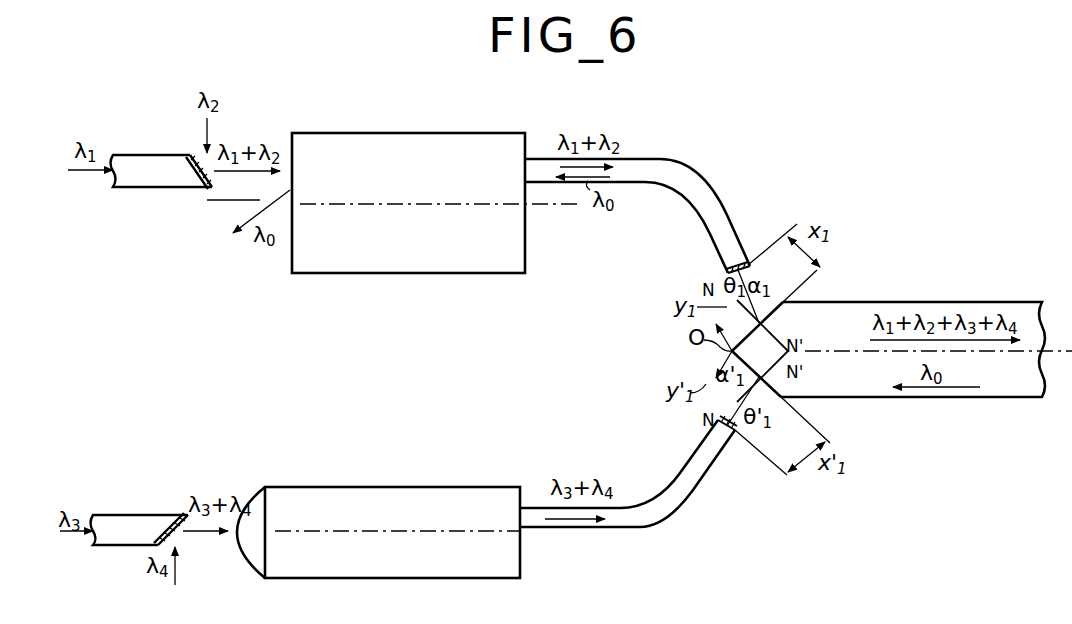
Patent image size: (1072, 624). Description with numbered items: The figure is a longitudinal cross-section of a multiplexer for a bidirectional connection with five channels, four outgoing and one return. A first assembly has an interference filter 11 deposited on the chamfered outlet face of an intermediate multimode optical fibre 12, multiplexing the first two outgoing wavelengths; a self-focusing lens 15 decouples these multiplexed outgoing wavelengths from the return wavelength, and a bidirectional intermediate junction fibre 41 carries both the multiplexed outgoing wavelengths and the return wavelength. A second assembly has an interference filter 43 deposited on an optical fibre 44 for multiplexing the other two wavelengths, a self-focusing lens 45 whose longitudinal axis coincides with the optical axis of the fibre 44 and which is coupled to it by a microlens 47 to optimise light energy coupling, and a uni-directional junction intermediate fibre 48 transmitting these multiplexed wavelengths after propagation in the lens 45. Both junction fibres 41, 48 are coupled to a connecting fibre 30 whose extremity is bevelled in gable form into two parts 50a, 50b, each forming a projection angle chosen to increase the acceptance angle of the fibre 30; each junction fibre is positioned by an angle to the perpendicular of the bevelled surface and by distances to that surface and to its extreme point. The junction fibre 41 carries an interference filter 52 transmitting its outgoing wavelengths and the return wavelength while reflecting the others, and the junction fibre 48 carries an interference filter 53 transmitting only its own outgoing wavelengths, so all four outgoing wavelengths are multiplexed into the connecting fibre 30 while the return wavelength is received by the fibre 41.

The interference filter 11 is at (214, 182).
The intermediate multimode optical fibre 12 is at (162, 155).
The self-focusing lens 15 is at (420, 274).
The connecting fibre 30 is at (968, 302).
The bidirectional intermediate junction fibre 41 is at (704, 174).
The interference filter 43 is at (176, 540).
The optical fibre 44 is at (128, 515).
The self-focusing lens 45 is at (420, 488).
The microlens 47 is at (252, 492).
The uni-directional junction intermediate fibre 48 is at (665, 513).
The bevelled part 50a is at (772, 322).
The bevelled part 50b is at (772, 385).
The interference filter 52 is at (742, 262).
The interference filter 53 is at (727, 432).